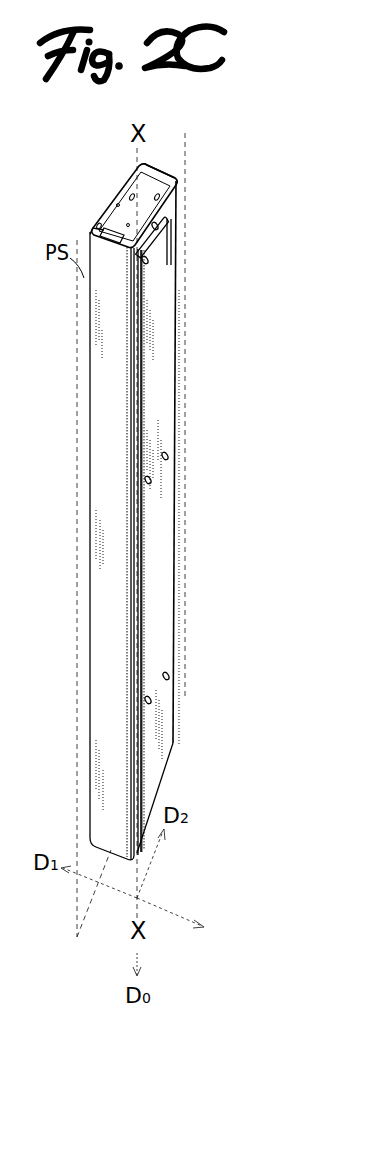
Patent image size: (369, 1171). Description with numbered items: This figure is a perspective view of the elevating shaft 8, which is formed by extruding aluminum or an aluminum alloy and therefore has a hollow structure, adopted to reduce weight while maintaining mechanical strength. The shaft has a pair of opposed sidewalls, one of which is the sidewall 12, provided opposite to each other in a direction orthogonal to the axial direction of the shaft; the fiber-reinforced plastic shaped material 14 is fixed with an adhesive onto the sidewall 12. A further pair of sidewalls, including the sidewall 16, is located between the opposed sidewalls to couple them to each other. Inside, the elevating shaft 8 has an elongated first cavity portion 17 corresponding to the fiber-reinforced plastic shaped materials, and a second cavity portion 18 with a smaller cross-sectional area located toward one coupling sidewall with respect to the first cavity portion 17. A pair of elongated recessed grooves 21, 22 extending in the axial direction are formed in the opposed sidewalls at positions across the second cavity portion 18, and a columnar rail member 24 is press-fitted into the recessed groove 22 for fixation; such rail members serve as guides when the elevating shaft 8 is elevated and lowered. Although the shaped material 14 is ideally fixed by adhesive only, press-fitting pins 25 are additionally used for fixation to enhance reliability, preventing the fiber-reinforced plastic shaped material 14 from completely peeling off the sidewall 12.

The elevating shaft 8 is at (195, 178).
The sidewall 12 is at (157, 758).
The fiber-reinforced plastic shaped material 14 is at (157, 549).
The sidewall 16 is at (166, 173).
The first cavity portion 17 is at (151, 165).
The second cavity portion 18 is at (139, 222).
The recessed groove 21 is at (92, 229).
The recessed groove 22 is at (170, 228).
The rail member 24 is at (141, 290).
The press-fitting pins 25 is at (159, 230).